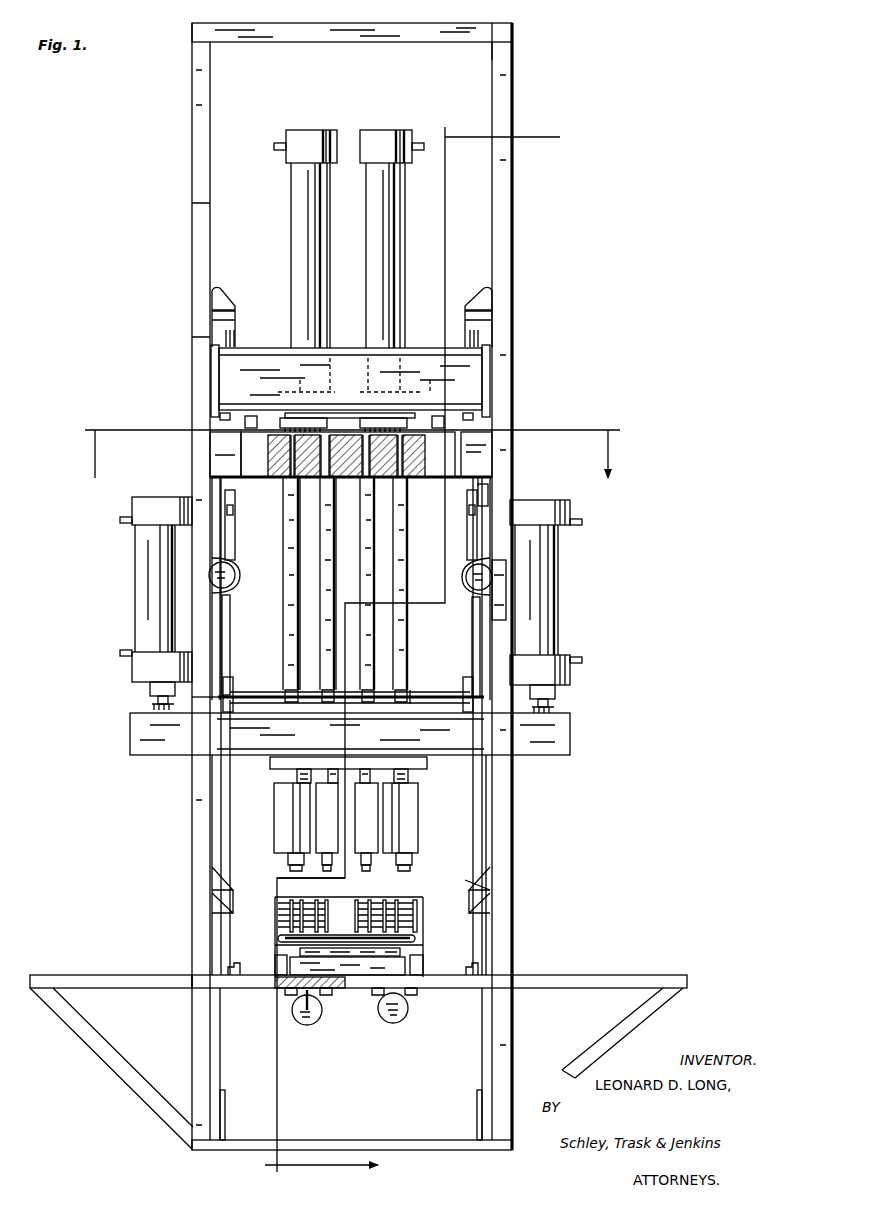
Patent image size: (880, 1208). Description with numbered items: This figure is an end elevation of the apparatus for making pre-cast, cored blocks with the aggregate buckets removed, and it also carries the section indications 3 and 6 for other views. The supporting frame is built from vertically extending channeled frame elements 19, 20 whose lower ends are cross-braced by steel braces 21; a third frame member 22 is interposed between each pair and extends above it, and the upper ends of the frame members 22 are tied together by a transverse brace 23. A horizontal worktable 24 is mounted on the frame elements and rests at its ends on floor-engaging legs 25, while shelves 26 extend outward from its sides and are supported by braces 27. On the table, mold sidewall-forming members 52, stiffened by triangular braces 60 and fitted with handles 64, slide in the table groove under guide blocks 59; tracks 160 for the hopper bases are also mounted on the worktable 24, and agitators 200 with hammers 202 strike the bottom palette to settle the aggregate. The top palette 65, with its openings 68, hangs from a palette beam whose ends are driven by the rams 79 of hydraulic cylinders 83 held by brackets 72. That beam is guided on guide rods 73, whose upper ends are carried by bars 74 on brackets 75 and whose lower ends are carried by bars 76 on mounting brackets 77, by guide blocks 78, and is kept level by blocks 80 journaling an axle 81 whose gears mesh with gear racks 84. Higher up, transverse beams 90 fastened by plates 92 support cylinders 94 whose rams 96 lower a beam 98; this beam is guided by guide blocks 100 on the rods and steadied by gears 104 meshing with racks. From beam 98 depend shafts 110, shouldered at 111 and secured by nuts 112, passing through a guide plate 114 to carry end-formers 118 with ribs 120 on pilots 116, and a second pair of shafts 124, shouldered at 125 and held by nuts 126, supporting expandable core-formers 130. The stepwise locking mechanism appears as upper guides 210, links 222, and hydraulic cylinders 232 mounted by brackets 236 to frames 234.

The section line 3- 3 is at (419, 654).
The section line 6- 6 is at (352, 476).
The frame element 19 is at (195, 357).
The frame element 20 is at (512, 388).
The steel braces 21 is at (482, 1105).
The frame member 22 is at (512, 106).
The brace 23 is at (432, 30).
The worktable 24 is at (435, 977).
The floor-engaging legs 25 is at (483, 1032).
The shelves 26 is at (92, 976).
The braces 27 is at (620, 1042).
The mold sidewall-forming members 52 is at (416, 906).
The guide blocks 59 is at (283, 968).
The triangularly shaped braces 60 is at (358, 975).
The handles 64 is at (415, 928).
The top palette 65 is at (445, 766).
The openings 68 is at (572, 732).
The brackets 72 is at (578, 678).
The guide rods 73 is at (480, 811).
The bars 74 is at (465, 318).
The brackets 75 is at (465, 300).
The bars 76 is at (466, 898).
The mounting brackets 77 is at (478, 913).
The guide block 78 is at (463, 688).
The rams 79 is at (556, 701).
The blocks 80 is at (270, 697).
The axle 81 is at (268, 690).
The hydraulic cylinders 83 is at (548, 592).
The gear racks 84 is at (490, 795).
The beams 90 is at (257, 350).
The plates 92 is at (488, 372).
The cylinders 94 is at (405, 226).
The rams 96 is at (390, 418).
The beam 98 is at (410, 480).
The guide block 100 is at (523, 447).
The gears 104 is at (478, 486).
The shafts 110 is at (407, 556).
The shoulders 111 is at (280, 482).
The nuts 112 is at (465, 453).
The guide plate 114 is at (415, 700).
The pilots 116 is at (412, 862).
The end-formers 118 is at (283, 829).
The ribs 120 is at (400, 805).
The shafts 124 is at (368, 531).
The shoulders 125 is at (333, 479).
The nuts 126 is at (362, 416).
The expandable core-formers 130 is at (338, 882).
The tracks 160 is at (470, 972).
The agitators 200 is at (398, 1018).
The hammers 202 is at (313, 1018).
The upper guides 210 is at (486, 506).
The links 222 is at (468, 528).
The hydraulic cylinders 232 is at (462, 596).
The frames 234 is at (508, 622).
The brackets 236 is at (462, 581).